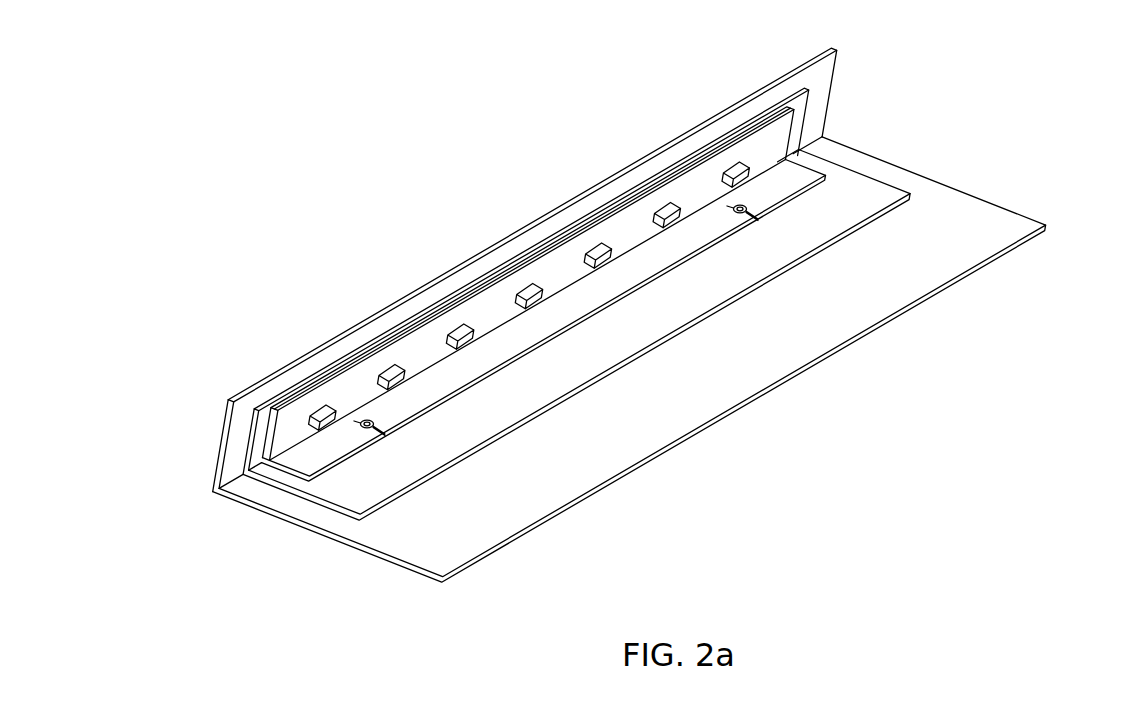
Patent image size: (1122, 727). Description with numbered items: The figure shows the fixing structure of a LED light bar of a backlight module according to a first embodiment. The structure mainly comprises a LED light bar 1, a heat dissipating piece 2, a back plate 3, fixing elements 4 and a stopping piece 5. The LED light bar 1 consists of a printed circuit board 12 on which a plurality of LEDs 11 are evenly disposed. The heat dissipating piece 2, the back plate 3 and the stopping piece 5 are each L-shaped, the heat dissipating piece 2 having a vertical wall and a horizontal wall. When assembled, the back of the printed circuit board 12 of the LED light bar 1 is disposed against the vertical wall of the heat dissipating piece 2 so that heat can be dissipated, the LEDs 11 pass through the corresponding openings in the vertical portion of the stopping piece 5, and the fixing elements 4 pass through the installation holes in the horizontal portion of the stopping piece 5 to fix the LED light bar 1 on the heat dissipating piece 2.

The LED light bar 1 is at (275, 389).
The heat dissipating piece 2 is at (237, 445).
The back plate 3 is at (220, 404).
The fixing elements 4 is at (366, 436).
The stopping piece 5 is at (297, 483).
The LEDs 11 is at (820, 139).
The printed circuit board 12 is at (775, 104).